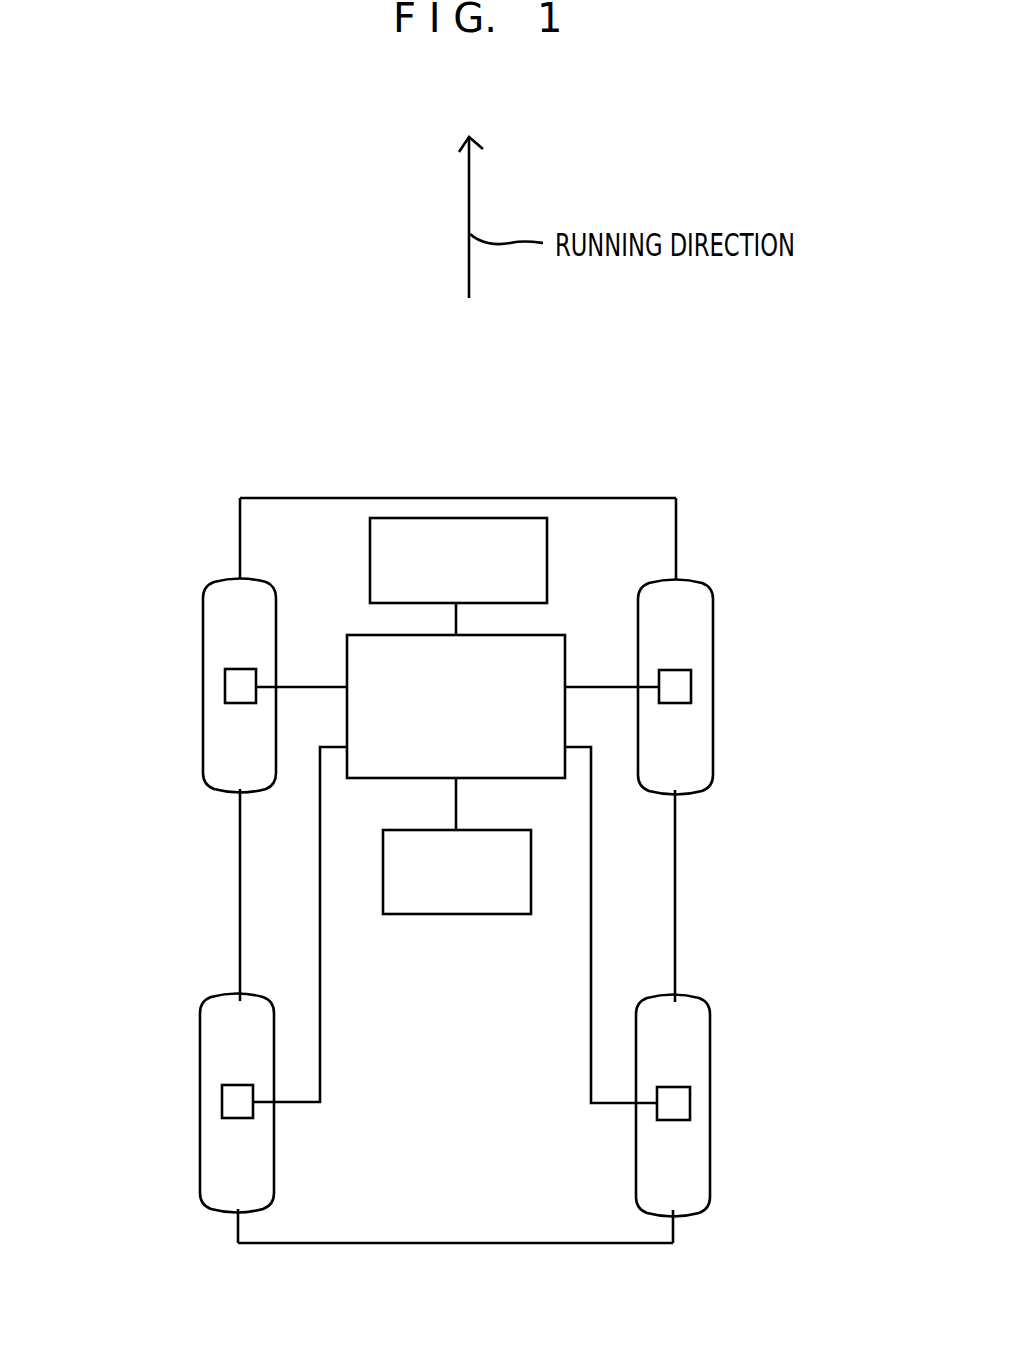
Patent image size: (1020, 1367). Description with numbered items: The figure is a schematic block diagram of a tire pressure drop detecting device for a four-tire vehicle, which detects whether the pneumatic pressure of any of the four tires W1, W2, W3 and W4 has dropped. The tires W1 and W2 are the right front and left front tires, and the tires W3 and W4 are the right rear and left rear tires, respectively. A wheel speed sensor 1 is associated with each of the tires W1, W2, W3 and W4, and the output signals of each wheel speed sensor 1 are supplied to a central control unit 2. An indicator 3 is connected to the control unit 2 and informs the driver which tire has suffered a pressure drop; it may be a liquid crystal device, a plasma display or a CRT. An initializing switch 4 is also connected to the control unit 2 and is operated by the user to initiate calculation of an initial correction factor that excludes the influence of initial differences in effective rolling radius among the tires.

The wheel speed sensor 1 is at (225, 688).
The control unit 2 is at (545, 632).
The indicator 3 is at (437, 916).
The initializing switch 4 is at (370, 552).
The tire W1 is at (186, 587).
The tire W2 is at (728, 595).
The tire W3 is at (170, 1192).
The tire W4 is at (722, 1205).